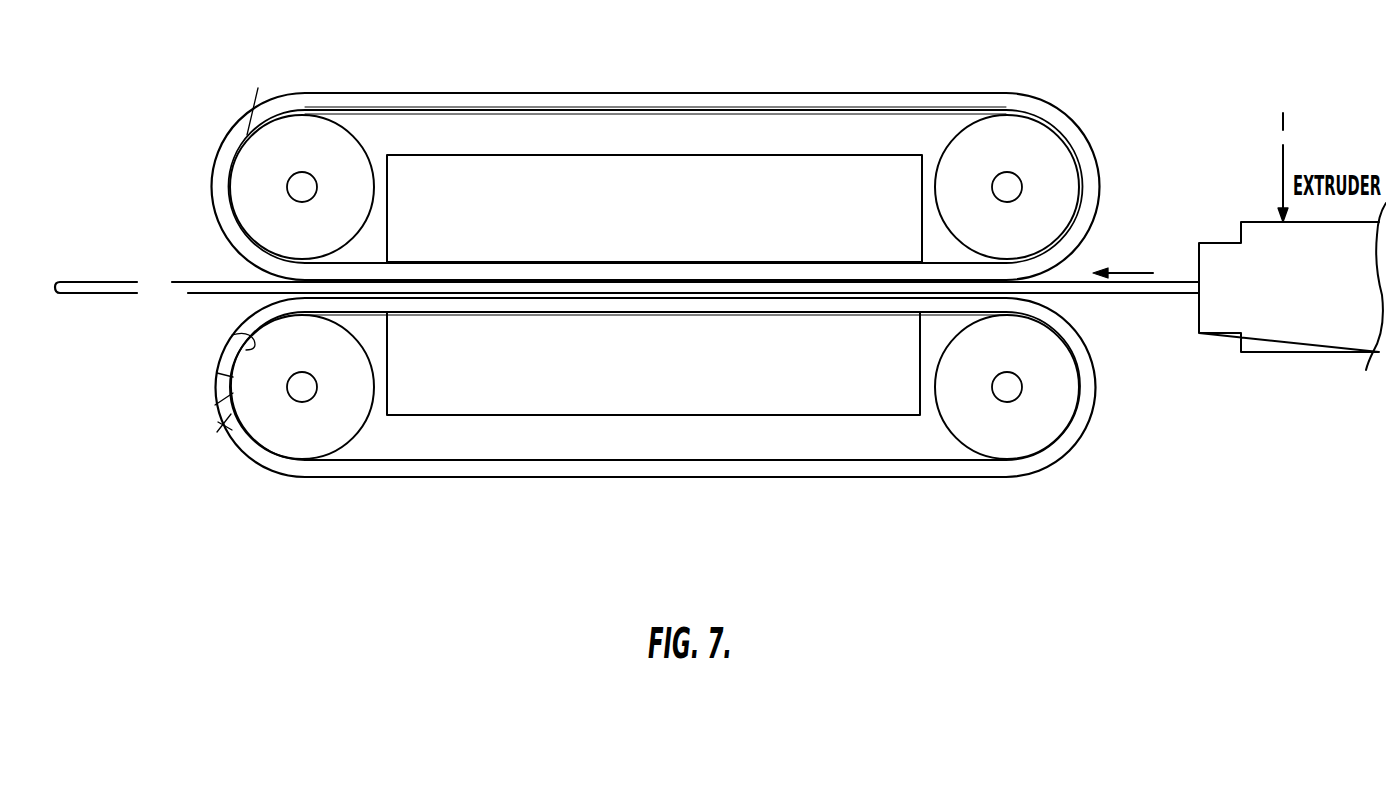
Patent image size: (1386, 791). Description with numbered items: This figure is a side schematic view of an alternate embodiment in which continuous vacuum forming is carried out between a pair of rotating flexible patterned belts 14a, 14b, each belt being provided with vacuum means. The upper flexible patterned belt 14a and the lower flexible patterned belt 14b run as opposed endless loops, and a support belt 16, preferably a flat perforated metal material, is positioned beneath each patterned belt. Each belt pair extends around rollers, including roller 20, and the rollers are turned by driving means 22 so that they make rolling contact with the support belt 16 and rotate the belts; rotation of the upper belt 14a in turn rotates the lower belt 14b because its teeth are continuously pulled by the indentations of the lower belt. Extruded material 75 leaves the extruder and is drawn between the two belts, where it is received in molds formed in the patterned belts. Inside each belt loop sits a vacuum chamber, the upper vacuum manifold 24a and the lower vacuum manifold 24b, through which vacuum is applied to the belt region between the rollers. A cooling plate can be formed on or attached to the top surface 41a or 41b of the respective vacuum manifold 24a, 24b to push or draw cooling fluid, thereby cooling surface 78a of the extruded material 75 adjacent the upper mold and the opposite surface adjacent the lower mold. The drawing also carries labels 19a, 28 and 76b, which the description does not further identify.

The flexible patterned belt 14a is at (832, 100).
The flexible patterned belt 14b is at (1035, 463).
The support belt 16 is at (383, 110).
The vacuum chamber region 19a is at (908, 603).
The roller 20 is at (1032, 132).
The driving means 22 is at (250, 340).
The vacuum manifold 24a is at (683, 168).
The vacuum manifold 24b is at (850, 402).
The idler roller 28 is at (302, 125).
The top surface 41a is at (425, 262).
The top surface 41b is at (433, 317).
The extruded material 75 is at (1178, 283).
The extruded product 76b is at (1078, 298).
The surface of extruded material 78a is at (1067, 300).